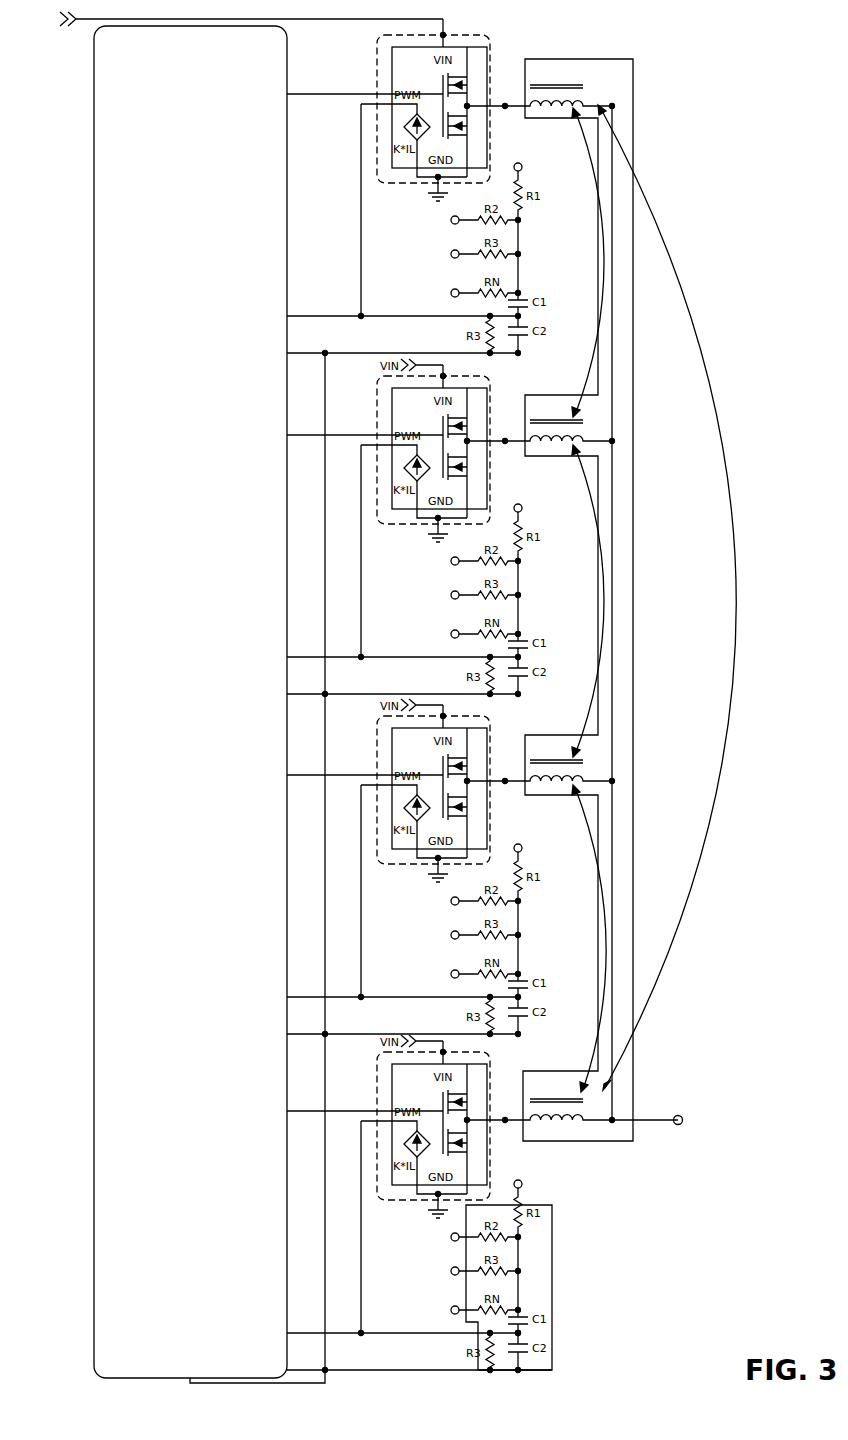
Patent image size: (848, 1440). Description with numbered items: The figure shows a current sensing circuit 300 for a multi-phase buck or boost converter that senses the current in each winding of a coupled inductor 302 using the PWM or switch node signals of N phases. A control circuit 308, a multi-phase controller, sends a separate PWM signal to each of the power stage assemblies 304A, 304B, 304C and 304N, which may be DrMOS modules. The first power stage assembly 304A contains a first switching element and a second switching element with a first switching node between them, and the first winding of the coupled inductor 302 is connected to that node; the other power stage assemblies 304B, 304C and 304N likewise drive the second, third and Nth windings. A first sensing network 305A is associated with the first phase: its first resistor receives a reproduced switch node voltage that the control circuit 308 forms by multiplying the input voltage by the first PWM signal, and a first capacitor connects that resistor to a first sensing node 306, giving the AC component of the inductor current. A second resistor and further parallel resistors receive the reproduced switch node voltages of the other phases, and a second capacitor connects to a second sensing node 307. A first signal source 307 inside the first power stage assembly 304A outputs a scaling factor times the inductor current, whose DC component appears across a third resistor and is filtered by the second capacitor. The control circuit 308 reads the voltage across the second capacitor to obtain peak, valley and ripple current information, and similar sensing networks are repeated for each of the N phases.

The current sensing circuit 300 is at (393, 698).
The first coupled inductor 302 is at (598, 59).
The power stage assembly 304N is at (492, 57).
The third power stage assembly 304C is at (492, 398).
The second power stage assembly 304B is at (492, 738).
The first power stage assembly 304A is at (492, 1076).
The first sensing network 305A is at (553, 1238).
The first sensing node 306 is at (556, 1362).
The first signal source 307 is at (522, 1336).
The control circuit 308 is at (94, 221).